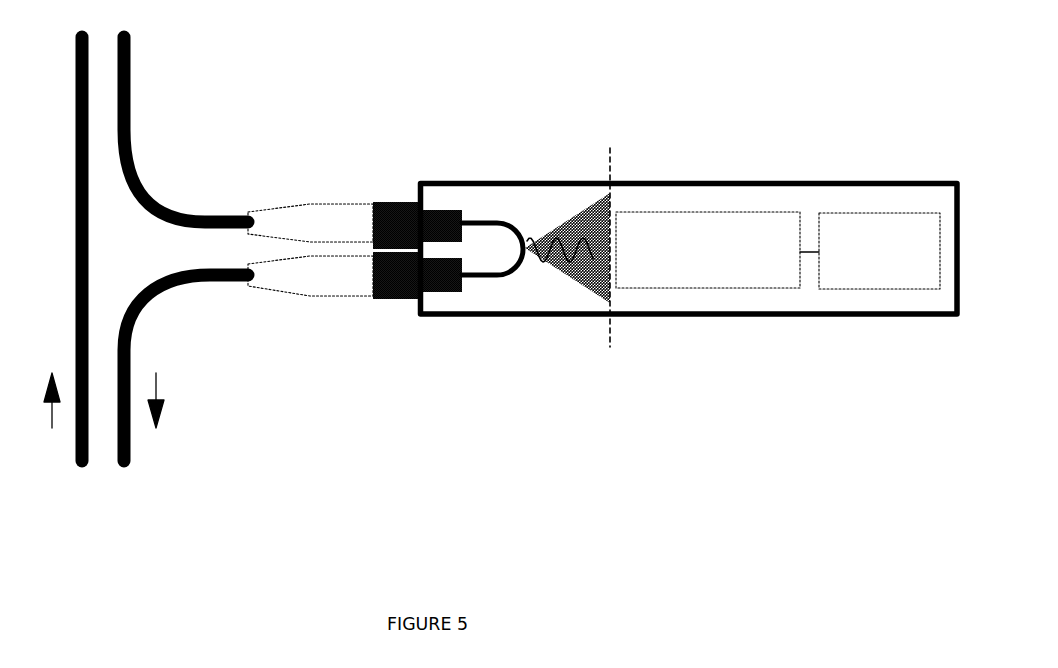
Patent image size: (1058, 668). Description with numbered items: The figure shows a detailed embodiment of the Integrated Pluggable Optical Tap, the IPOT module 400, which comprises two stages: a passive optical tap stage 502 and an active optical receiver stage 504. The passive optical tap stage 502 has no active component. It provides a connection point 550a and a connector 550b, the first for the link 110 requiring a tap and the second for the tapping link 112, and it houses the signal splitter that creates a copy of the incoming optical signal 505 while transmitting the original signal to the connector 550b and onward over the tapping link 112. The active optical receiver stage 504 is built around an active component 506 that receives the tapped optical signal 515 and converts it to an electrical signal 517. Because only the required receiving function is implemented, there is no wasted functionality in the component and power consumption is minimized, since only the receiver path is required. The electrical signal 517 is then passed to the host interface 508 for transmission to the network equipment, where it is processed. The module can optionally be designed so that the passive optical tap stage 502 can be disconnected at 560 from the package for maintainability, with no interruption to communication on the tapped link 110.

The link 110 is at (150, 193).
The tapping link 112 is at (177, 288).
The IPOT module 400 is at (710, 137).
The passive optical tap stage 502 is at (518, 316).
The active optical receiver stage 504 is at (707, 316).
The incoming optical signal 505 is at (472, 278).
The active component 506 is at (785, 215).
The host interface 508 is at (880, 277).
The optical signal 515 is at (552, 237).
The electrical signal 517 is at (813, 253).
The connection point 550a is at (397, 202).
The connector 550b is at (395, 299).
The disconnection point 560 is at (612, 320).